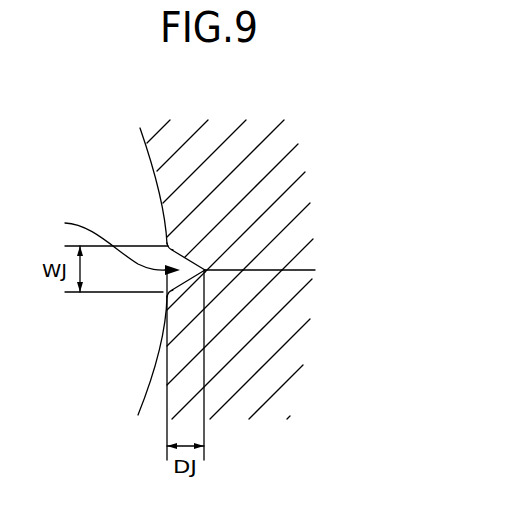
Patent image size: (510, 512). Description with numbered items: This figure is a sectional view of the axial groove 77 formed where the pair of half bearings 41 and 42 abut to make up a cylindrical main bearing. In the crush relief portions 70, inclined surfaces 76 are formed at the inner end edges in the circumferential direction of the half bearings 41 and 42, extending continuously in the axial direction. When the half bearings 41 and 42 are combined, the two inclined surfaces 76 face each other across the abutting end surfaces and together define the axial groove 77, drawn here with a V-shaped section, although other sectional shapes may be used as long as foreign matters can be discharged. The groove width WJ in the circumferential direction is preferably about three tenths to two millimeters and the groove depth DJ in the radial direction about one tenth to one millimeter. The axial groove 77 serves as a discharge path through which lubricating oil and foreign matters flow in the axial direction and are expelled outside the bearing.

The half bearing 41 is at (295, 197).
The half bearing 42 is at (293, 344).
The crush relief portion 70 is at (140, 129).
The inclined surface 76 is at (166, 247).
The axial groove 77 is at (107, 242).